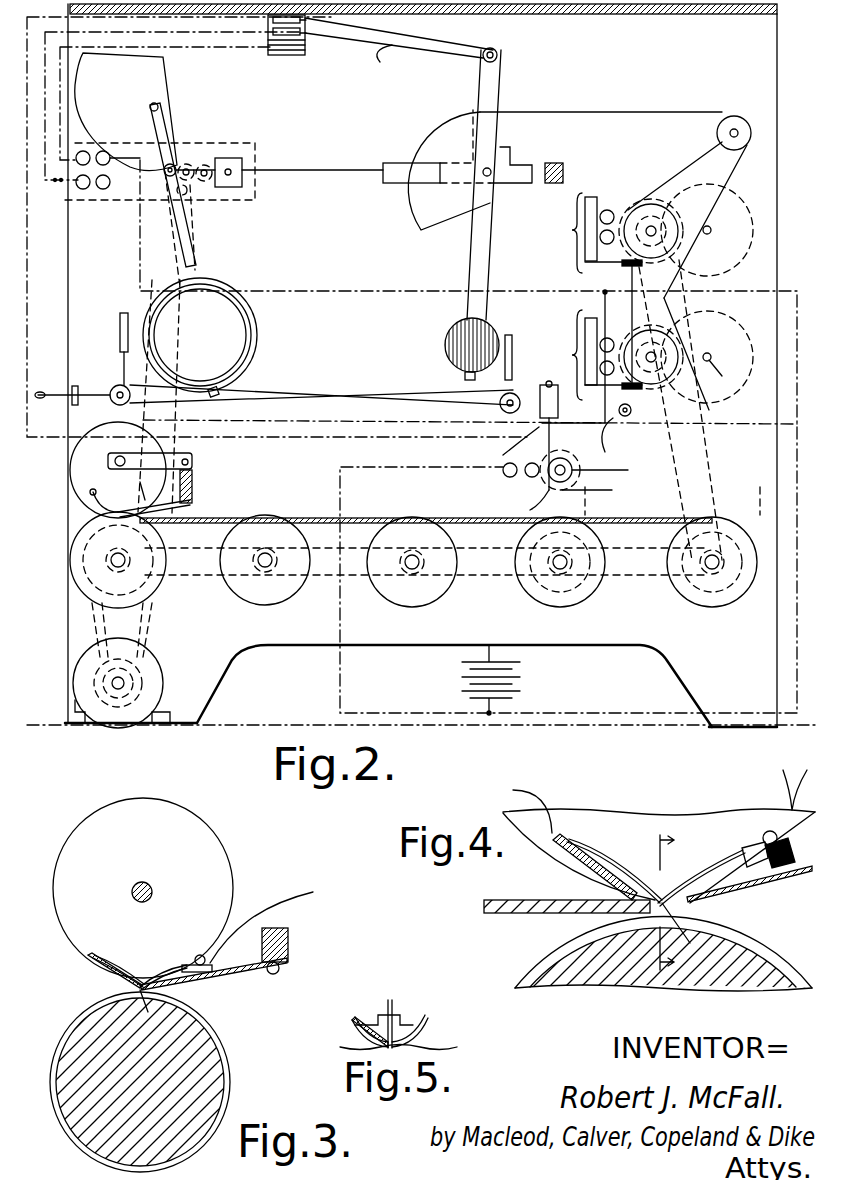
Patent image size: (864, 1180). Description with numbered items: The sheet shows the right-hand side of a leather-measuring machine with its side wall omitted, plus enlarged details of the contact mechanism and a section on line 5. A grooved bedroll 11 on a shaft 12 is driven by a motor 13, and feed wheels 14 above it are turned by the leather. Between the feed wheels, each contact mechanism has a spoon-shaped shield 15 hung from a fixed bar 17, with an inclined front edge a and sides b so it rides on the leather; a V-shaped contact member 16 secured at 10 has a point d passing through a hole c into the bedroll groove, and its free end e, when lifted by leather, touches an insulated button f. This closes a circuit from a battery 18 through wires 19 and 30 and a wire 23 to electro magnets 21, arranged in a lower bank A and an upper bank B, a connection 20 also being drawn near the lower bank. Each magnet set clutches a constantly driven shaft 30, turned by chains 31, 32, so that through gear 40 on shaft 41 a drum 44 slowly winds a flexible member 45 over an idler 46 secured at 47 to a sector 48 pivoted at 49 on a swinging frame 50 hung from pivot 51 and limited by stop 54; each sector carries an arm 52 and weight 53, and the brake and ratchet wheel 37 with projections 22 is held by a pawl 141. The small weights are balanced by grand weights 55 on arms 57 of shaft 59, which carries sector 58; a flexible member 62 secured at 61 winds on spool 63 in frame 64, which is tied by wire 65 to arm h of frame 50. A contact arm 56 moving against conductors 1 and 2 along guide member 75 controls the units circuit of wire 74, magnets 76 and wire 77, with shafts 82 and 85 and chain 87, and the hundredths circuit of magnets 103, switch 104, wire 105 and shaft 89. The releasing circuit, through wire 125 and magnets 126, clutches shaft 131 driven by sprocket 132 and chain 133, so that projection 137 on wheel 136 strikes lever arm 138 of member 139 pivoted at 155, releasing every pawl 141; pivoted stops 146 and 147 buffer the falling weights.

In FIG. 2, the conducting surface 1 is at (288, 55).
In FIG. 2, the contact member 2 is at (303, 36).
In FIG. 2, the guide member 75 is at (399, 35).
In FIG. 2, the contact arm 56 is at (383, 64).
In FIG. 2, the pivot 51 is at (498, 52).
In FIG. 2, the frame end member 50 is at (502, 82).
In FIG. 2, the arm h is at (390, 165).
In FIG. 2, the pivot 49 is at (492, 170).
In FIG. 2, the stop 54 is at (563, 166).
In FIG. 2, the sector or cam 48 is at (455, 215).
In FIG. 2, the securing point 47 is at (445, 222).
In FIG. 2, the idler 46 is at (740, 118).
In FIG. 2, the flexible member 45 is at (728, 172).
In FIG. 2, the brake and ratchet wheel 37 is at (701, 357).
In FIG. 2, the gear 40 is at (722, 333).
In FIG. 2, the shaft 41 is at (724, 375).
In FIG. 2, the drum 44 is at (658, 302).
In FIG. 2, the shaft 30 is at (651, 357).
In FIG. 2, the upper bank B is at (594, 233).
In FIG. 2, the pawl 141 is at (620, 390).
In FIG. 2, the lower bank A is at (593, 355).
In FIG. 2, the wire 20 is at (603, 307).
In FIG. 2, the electro magnets 21 is at (612, 342).
In FIG. 2, the projections 22 is at (627, 428).
In FIG. 2, the pivoted stop 146 is at (512, 346).
In FIG. 2, the weight 53 is at (448, 349).
In FIG. 2, the arm 52 is at (490, 276).
In FIG. 2, the pivot 155 is at (543, 425).
In FIG. 2, the member 139 is at (510, 439).
In FIG. 2, the shaft 131 is at (565, 458).
In FIG. 2, the sprocket wheel 132 is at (583, 468).
In FIG. 2, the electro magnets 126 is at (503, 470).
In FIG. 2, the wheel 136 is at (615, 471).
In FIG. 2, the projection 137 is at (600, 489).
In FIG. 2, the lever arm 138 is at (521, 505).
In FIG. 2, the chain 133 is at (672, 505).
In FIG. 2, the chain 32 is at (701, 553).
In FIG. 2, the securing point 61 is at (85, 55).
In FIG. 2, the sector 58 is at (121, 89).
In FIG. 2, the wire 105 is at (180, 32).
In FIG. 2, the wire 74 is at (232, 47).
In FIG. 2, the shaft 59 is at (162, 108).
In FIG. 2, the chain 87 is at (172, 241).
In FIG. 2, the shaft 82 is at (167, 164).
In FIG. 2, the shaft 85 is at (188, 162).
In FIG. 2, the flexible member 62 is at (208, 163).
In FIG. 2, the shaft 89 is at (185, 196).
In FIG. 2, the frame 64 is at (242, 158).
In FIG. 2, the spool 63 is at (232, 176).
In FIG. 2, the connecting member 65 is at (320, 170).
In FIG. 2, the electro magnets 76 is at (86, 151).
In FIG. 2, the switch 104 is at (54, 184).
In FIG. 2, the magnets 103 is at (104, 190).
In FIG. 2, the arm 57 is at (192, 264).
In FIG. 2, the grand weight 55 is at (245, 347).
In FIG. 2, the wire 77 is at (305, 291).
In FIG. 2, the pivoted stop 147 is at (120, 324).
In FIG. 2, the wire 23 is at (345, 423).
In FIG. 3, the wire 23 is at (272, 905).
In FIG. 4, the wire 23 is at (787, 779).
In FIG. 2, the wire 125 is at (255, 437).
In FIG. 2, the feed wheel 14 is at (70, 461).
In FIG. 3, the feed wheel 14 is at (72, 837).
In FIG. 4, the feed wheel 14 is at (647, 812).
In FIG. 2, the fixed member or bar 17 is at (195, 491).
In FIG. 3, the fixed member or bar 17 is at (288, 933).
In FIG. 2, the spoon-shaped shield 15 is at (95, 504).
In FIG. 3, the spoon-shaped shield 15 is at (245, 972).
In FIG. 5, the spoon-shaped shield 15 is at (414, 1017).
In FIG. 4, the spoon-shaped shield 15 is at (762, 868).
In FIG. 2, the contact member 16 is at (108, 500).
In FIG. 3, the contact member 16 is at (130, 972).
In FIG. 5, the contact member 16 is at (388, 1005).
In FIG. 4, the contact member 16 is at (647, 877).
In FIG. 2, the button f is at (137, 483).
In FIG. 3, the button f is at (200, 955).
In FIG. 4, the button f is at (742, 847).
In FIG. 2, the chain 31 is at (188, 576).
In FIG. 2, the shaft 12 is at (108, 559).
In FIG. 2, the grooved bedroll 11 is at (80, 591).
In FIG. 3, the grooved bedroll 11 is at (65, 1023).
In FIG. 4, the grooved bedroll 11 is at (523, 970).
In FIG. 2, the motor 13 is at (165, 673).
In FIG. 2, the wire 19 is at (580, 711).
In FIG. 2, the battery 18 is at (462, 681).
In FIG. 3, the securing point 10 is at (92, 953).
In FIG. 4, the securing point 10 is at (565, 835).
In FIG. 3, the front edge a is at (88, 956).
In FIG. 4, the front edge a is at (523, 807).
In FIG. 3, the sides b is at (153, 977).
In FIG. 5, the sides b is at (432, 1022).
In FIG. 4, the sides b is at (670, 873).
In FIG. 5, the hole c is at (327, 1047).
In FIG. 4, the hole c is at (680, 900).
In FIG. 3, the point d is at (140, 1000).
In FIG. 5, the point d is at (468, 1051).
In FIG. 4, the point d is at (686, 934).
In FIG. 3, the free end e is at (182, 975).
In FIG. 4, the free end e is at (767, 870).
In FIG. 4, the section line 5 is at (663, 902).